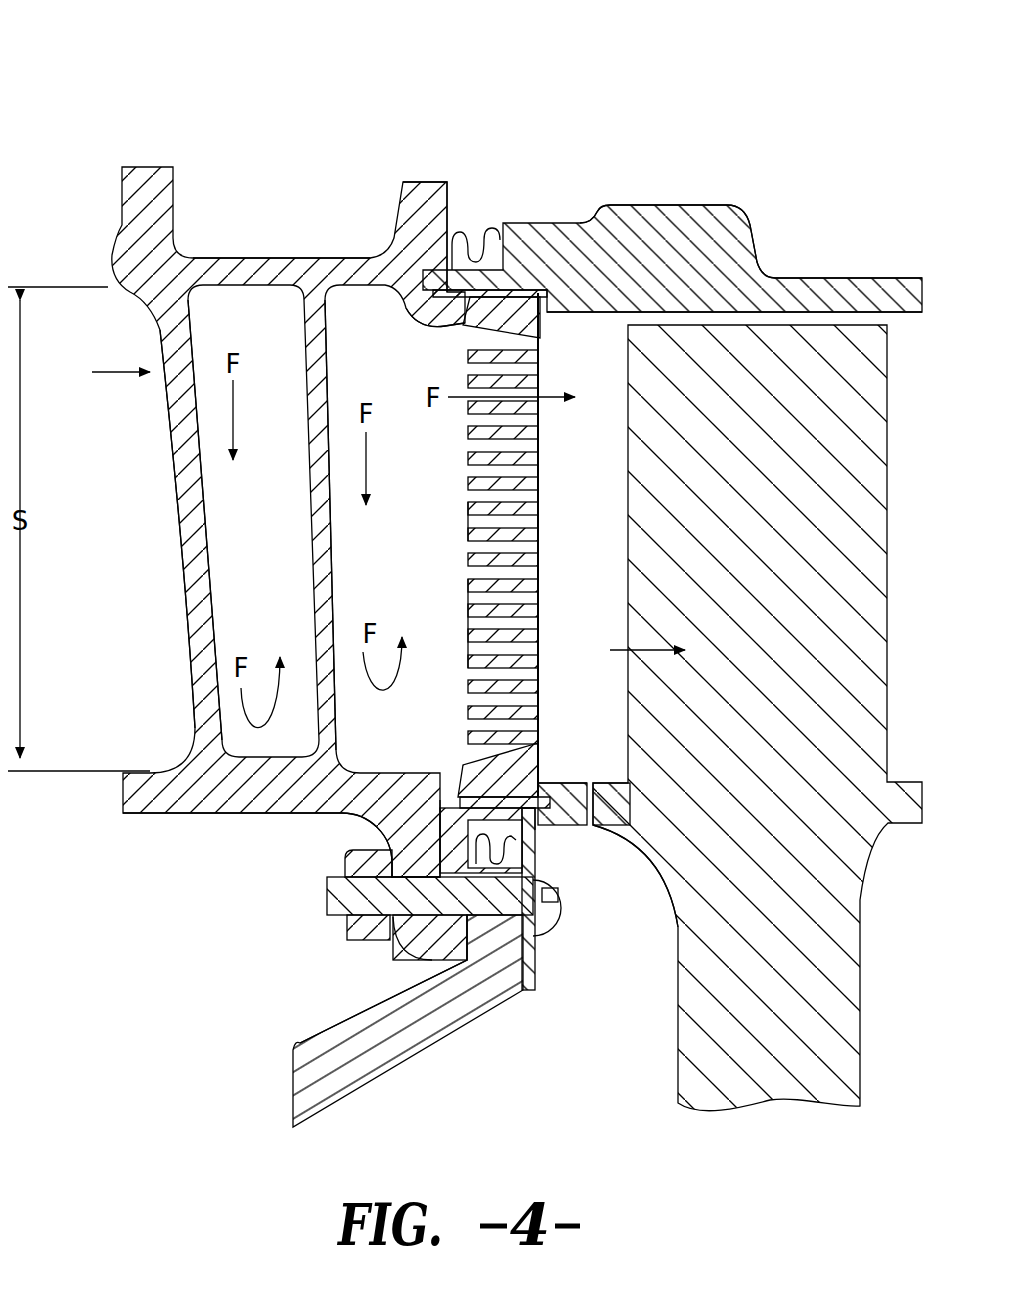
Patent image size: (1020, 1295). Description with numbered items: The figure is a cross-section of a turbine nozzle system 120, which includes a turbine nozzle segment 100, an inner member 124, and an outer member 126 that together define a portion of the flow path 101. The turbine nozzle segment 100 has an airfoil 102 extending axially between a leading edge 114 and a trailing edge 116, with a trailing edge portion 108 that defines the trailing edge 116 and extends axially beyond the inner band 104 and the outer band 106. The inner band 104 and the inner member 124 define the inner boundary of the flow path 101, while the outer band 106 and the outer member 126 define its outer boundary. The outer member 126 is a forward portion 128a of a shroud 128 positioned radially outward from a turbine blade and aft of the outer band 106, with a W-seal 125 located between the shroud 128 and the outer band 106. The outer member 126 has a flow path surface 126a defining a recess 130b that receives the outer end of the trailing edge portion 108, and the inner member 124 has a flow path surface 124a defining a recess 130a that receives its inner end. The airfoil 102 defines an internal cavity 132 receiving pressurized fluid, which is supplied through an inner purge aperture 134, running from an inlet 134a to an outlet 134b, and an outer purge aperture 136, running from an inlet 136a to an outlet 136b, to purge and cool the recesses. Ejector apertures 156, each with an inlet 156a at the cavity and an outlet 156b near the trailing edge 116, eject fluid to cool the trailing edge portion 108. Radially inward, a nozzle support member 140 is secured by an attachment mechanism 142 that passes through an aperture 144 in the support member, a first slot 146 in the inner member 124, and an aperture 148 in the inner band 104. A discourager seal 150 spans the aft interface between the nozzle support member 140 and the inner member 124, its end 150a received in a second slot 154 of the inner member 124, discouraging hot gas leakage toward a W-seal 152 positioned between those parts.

The turbine nozzle system 120 is at (150, 97).
The turbine nozzle segment 100 is at (305, 215).
The outer band 106 is at (218, 268).
The turbine nozzle airfoil 102 is at (178, 472).
The leading edge 114 is at (180, 562).
The internal cavity 132 is at (345, 560).
The inner band 104 is at (212, 812).
The outer purge aperture 136 is at (437, 312).
The inlet 136a is at (455, 328).
The outlet 136b is at (538, 255).
The first slot 146 is at (430, 868).
The outer member 126 is at (540, 250).
The shroud 128 is at (733, 237).
The forward portion 128a is at (565, 205).
The flow path surface 126a is at (590, 318).
The W-seal 125 is at (470, 250).
The recess 130b is at (542, 315).
The trailing edge portion 108 is at (510, 480).
The trailing edge 116 is at (545, 537).
The inlet 156a is at (470, 520).
The ejector apertures 156 is at (475, 647).
The outlet 156b is at (543, 620).
The inlet 134a is at (462, 778).
The outlet 134b is at (537, 790).
The inner purge aperture 134 is at (455, 790).
The recess 130a is at (541, 782).
The inner member 124 is at (600, 800).
The flow path surface 124a is at (583, 778).
The second slot 154 is at (615, 835).
The discourager seal 150 is at (537, 970).
The end 150a is at (548, 832).
The W-seal 152 is at (540, 858).
The attachment mechanism 142 is at (343, 893).
The aperture 148 is at (418, 930).
The nozzle support member 140 is at (397, 1033).
The aperture 144 is at (483, 997).
The flow path 101 is at (361, 514).